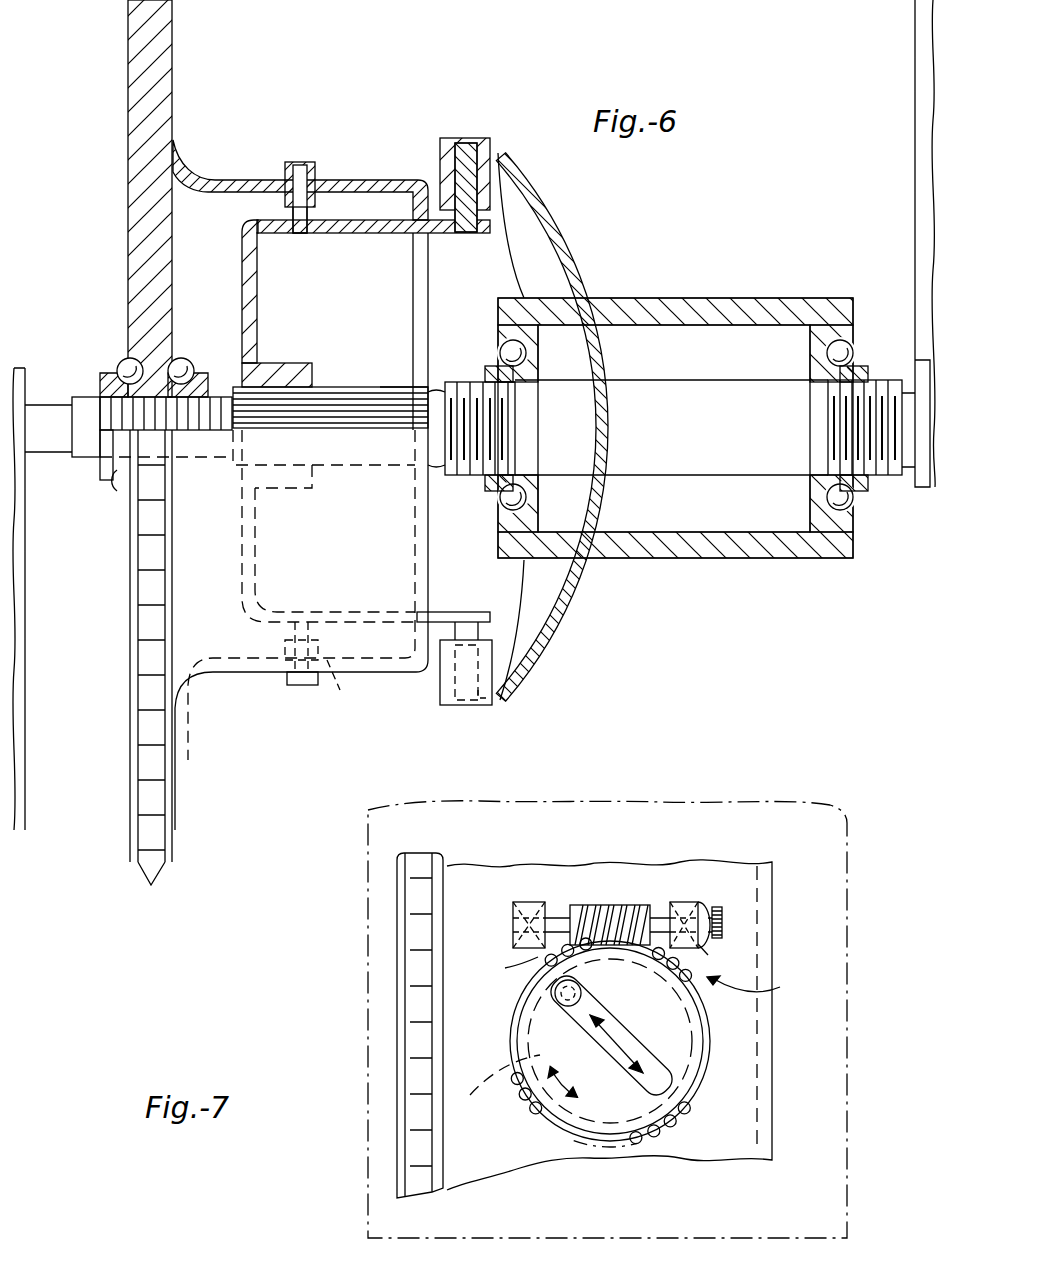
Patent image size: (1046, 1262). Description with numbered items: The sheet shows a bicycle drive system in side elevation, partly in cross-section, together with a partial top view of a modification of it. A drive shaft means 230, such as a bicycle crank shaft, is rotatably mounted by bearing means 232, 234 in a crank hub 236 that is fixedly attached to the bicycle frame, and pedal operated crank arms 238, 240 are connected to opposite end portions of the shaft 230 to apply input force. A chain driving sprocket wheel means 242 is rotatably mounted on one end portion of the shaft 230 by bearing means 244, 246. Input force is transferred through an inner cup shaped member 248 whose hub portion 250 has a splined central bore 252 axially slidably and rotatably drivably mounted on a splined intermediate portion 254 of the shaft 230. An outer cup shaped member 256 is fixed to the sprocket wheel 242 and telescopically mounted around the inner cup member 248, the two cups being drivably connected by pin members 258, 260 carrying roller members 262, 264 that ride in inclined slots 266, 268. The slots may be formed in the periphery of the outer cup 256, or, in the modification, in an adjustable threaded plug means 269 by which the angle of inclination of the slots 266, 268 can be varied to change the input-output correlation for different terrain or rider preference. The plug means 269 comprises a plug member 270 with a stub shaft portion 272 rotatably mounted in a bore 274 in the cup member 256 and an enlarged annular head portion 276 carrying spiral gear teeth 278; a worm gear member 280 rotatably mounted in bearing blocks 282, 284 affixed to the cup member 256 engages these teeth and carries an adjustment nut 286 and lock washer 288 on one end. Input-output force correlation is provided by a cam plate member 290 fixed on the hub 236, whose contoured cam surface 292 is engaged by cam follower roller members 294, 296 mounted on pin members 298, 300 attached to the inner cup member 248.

In FIG. 6, the drive shaft means 230 is at (48, 445).
In FIG. 6, the bearing means 232 is at (503, 508).
In FIG. 6, the bearing means 234 is at (852, 510).
In FIG. 6, the crank hub 236 is at (744, 560).
In FIG. 6, the crank arm 238 is at (28, 770).
In FIG. 6, the crank arm 240 is at (912, 170).
In FIG. 6, the chain driving sprocket wheel means 242 is at (175, 65).
In FIG. 7, the chain driving sprocket wheel means 242 is at (396, 945).
In FIG. 6, the bearing means 244 is at (120, 362).
In FIG. 6, the bearing means 246 is at (190, 360).
In FIG. 6, the inner cup shaped member 248 is at (246, 222).
In FIG. 6, the hub portion 250 is at (262, 366).
In FIG. 6, the splined central bore 252 is at (318, 389).
In FIG. 6, the splined intermediate portion 254 is at (372, 386).
In FIG. 6, the outer cup shaped member 256 is at (205, 180).
In FIG. 7, the outer cup shaped member 256 is at (487, 866).
In FIG. 6, the pin member 258 is at (300, 234).
In FIG. 6, the pin member 260 is at (333, 606).
In FIG. 6, the roller member 262 is at (302, 163).
In FIG. 7, the roller member 262 is at (562, 1005).
In FIG. 6, the roller member 264 is at (285, 688).
In FIG. 6, the inclined slot 266 is at (325, 190).
In FIG. 7, the inclined slot 266 is at (636, 1008).
In FIG. 6, the inclined slot 268 is at (350, 687).
In FIG. 7, the adjustable threaded plug means 269 is at (765, 986).
In FIG. 7, the plug member 270 is at (680, 1083).
In FIG. 7, the stub shaft portion 272 is at (523, 1113).
In FIG. 7, the bore 274 is at (547, 1101).
In FIG. 7, the enlarged annular head portion 276 is at (690, 1062).
In FIG. 7, the spiral gear teeth 278 is at (501, 969).
In FIG. 7, the worm gear member 280 is at (632, 906).
In FIG. 7, the bearing block 282 is at (513, 918).
In FIG. 7, the bearing block 284 is at (715, 890).
In FIG. 7, the adjustment nut 286 is at (722, 922).
In FIG. 7, the lock washer 288 is at (727, 959).
In FIG. 6, the cam plate member 290 is at (565, 243).
In FIG. 6, the cam surface 292 is at (508, 262).
In FIG. 6, the cam follower roller member 294 is at (455, 118).
In FIG. 6, the cam follower roller member 296 is at (445, 708).
In FIG. 6, the pin member 298 is at (470, 145).
In FIG. 6, the pin member 300 is at (485, 708).